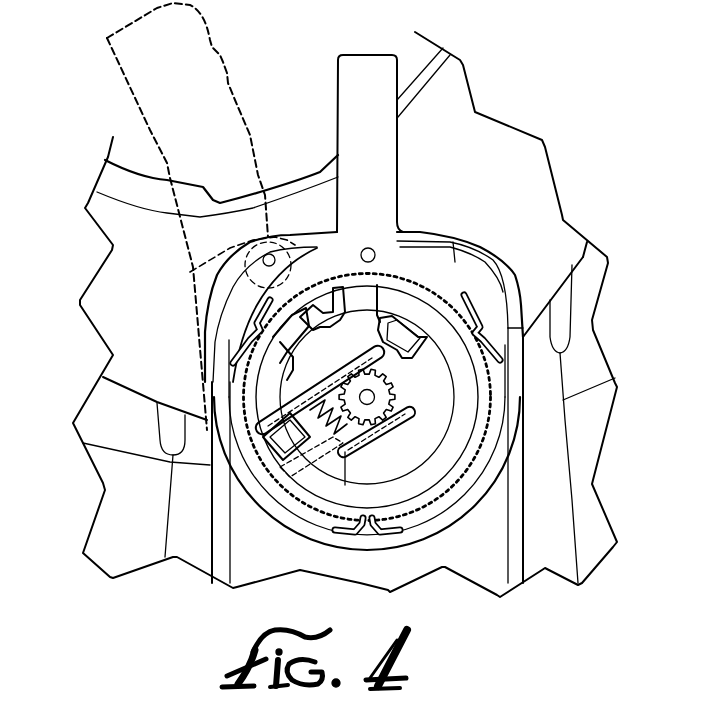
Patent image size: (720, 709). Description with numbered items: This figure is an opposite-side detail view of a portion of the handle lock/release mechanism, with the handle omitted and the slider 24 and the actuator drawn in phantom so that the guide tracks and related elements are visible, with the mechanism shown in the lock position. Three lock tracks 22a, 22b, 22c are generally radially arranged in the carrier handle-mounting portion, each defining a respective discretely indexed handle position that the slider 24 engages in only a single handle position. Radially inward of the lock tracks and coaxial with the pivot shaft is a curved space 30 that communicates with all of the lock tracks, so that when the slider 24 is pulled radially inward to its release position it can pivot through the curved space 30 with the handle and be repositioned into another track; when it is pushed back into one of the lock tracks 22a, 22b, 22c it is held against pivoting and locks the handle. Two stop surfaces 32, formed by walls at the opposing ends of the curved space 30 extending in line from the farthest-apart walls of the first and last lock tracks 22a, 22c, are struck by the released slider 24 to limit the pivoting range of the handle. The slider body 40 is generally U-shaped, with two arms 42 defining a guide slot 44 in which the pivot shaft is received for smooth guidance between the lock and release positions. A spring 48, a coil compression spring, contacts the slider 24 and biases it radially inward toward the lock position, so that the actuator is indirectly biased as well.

The first lock track 22a is at (280, 440).
The second lock track 22b is at (322, 300).
The third lock track 22c is at (358, 310).
The slider 24 is at (250, 457).
The curved space 30 is at (318, 360).
The stop surfaces 32 is at (250, 373).
The slider body 40 is at (240, 430).
The arms 42 is at (395, 366).
The guide slot 44 is at (418, 393).
The spring 48 is at (365, 441).